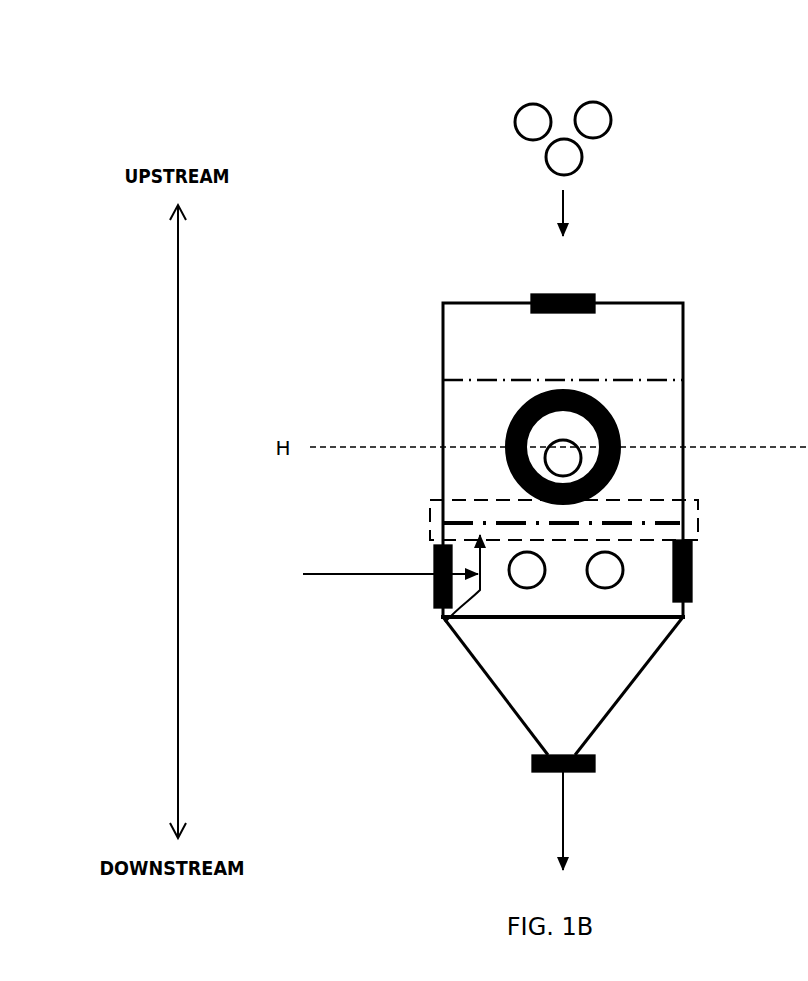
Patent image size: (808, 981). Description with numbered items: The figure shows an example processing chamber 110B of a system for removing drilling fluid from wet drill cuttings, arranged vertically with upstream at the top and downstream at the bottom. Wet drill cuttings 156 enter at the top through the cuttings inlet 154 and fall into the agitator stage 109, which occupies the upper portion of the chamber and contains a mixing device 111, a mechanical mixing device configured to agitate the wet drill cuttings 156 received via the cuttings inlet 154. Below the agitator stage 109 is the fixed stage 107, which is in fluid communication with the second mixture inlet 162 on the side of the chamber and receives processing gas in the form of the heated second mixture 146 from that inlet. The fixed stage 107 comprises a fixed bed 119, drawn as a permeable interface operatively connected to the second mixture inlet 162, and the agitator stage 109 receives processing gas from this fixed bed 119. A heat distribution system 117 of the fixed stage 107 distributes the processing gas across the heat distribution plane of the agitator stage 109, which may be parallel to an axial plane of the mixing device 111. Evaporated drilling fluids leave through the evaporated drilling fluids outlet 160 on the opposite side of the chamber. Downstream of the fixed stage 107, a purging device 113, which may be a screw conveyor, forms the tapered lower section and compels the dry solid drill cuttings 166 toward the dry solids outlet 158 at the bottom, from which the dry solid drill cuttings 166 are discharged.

The processing chamber 110B is at (686, 260).
The wet drill cuttings 156 is at (576, 95).
The cuttings inlet 154 is at (548, 294).
The agitator stage 109 is at (652, 420).
The mixing device 111 is at (506, 430).
The heat distribution system 117 is at (702, 502).
The fixed bed 119 is at (455, 518).
The second mixture inlet 162 is at (434, 562).
The evaporated drilling fluids outlet 160 is at (692, 568).
The fixed stage 107 is at (654, 588).
The heated second mixture 146 is at (395, 577).
The purging device 113 is at (595, 664).
The dry solids outlet 158 is at (530, 773).
The dry solid drill cuttings 166 is at (563, 812).